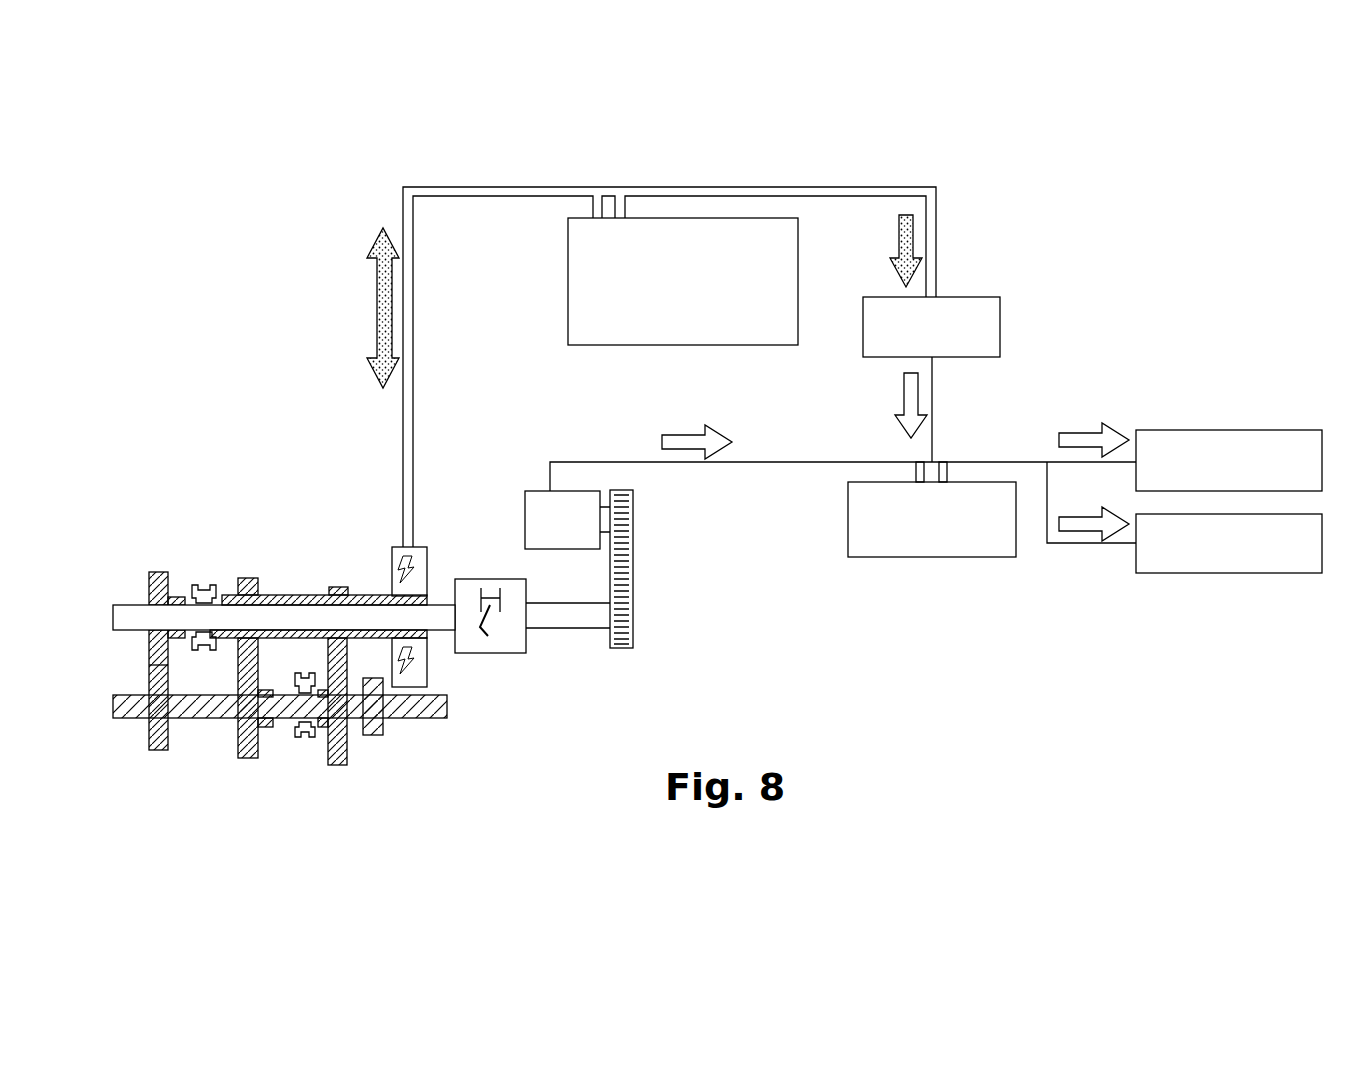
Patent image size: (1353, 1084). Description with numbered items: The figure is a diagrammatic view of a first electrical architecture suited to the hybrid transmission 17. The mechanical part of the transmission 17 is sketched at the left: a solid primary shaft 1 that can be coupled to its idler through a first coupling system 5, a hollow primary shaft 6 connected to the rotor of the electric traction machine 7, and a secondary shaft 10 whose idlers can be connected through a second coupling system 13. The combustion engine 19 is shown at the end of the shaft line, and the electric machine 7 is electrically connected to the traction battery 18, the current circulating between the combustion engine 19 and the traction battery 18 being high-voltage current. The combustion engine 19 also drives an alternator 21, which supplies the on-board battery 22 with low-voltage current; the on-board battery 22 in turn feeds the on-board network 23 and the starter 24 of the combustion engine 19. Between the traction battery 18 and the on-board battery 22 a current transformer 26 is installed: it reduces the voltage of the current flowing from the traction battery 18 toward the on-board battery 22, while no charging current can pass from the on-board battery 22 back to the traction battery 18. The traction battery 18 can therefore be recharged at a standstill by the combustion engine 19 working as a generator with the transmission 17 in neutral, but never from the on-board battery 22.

The solid primary shaft 1 is at (130, 622).
The first coupling system 5 is at (205, 588).
The hollow primary shaft 6 is at (285, 598).
The electric machine 7 is at (428, 663).
The secondary shaft 10 is at (133, 706).
The second coupling system 13 is at (295, 735).
The hybrid transmission 17 is at (132, 552).
The traction battery 18 is at (683, 281).
The combustion engine 19 is at (509, 641).
The alternator 21 is at (567, 520).
The on-board battery 22 is at (932, 519).
The on-board network 23 is at (1229, 460).
The starter 24 is at (1229, 543).
The current transformer 26 is at (931, 327).